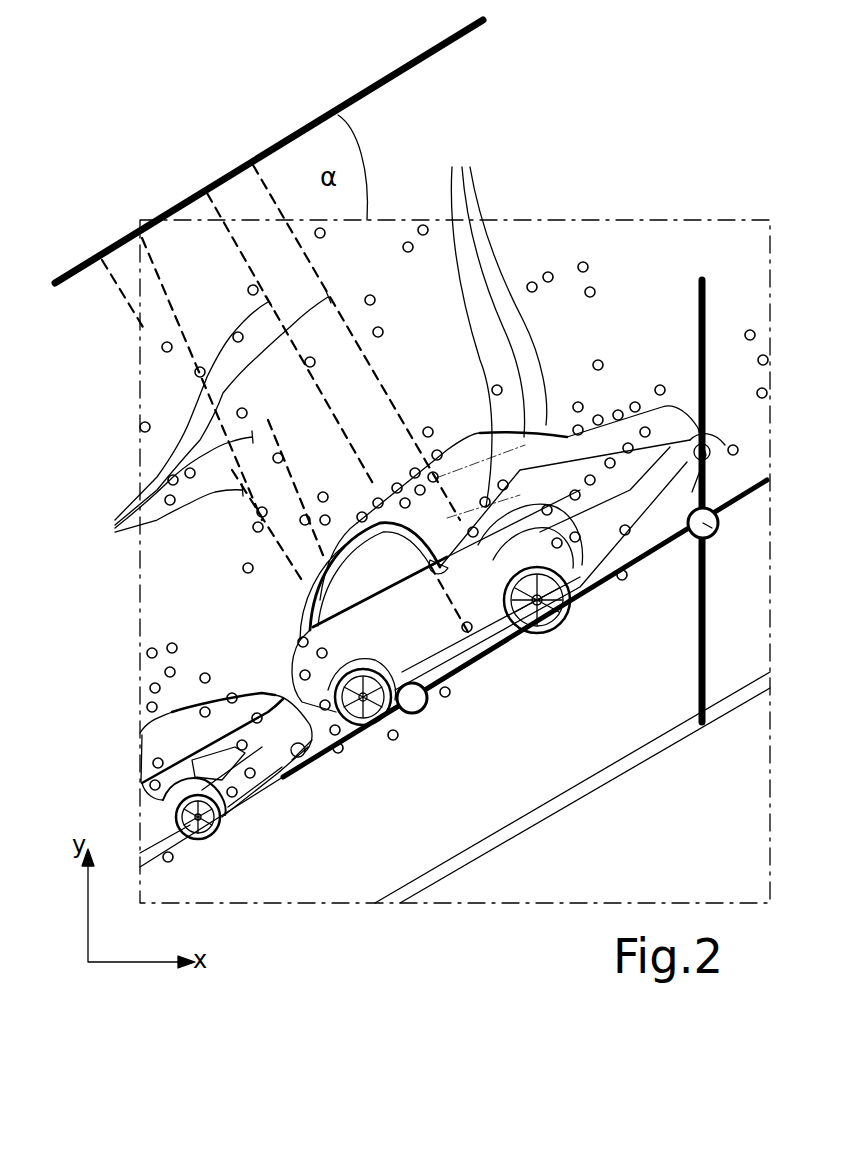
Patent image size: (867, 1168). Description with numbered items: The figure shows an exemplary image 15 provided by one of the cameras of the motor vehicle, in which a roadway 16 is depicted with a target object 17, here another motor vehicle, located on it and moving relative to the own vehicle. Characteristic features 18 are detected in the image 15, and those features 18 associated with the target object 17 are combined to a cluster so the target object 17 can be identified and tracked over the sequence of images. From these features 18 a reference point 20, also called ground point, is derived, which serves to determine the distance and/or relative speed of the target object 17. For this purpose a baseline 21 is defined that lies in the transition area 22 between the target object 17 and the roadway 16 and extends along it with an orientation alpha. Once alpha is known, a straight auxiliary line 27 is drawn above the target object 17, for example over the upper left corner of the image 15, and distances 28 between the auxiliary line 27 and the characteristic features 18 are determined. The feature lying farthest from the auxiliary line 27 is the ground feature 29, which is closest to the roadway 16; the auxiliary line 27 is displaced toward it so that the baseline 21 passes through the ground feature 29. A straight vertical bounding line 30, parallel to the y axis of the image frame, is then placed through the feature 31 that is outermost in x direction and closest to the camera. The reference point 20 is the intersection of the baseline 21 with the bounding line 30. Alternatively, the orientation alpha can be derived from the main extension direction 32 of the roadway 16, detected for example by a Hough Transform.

The image 15 is at (593, 220).
The roadway 16 is at (565, 757).
The target object 17 is at (558, 534).
The characteristic features 18 is at (497, 324).
The reference point 20 is at (719, 523).
The baseline 21 is at (598, 582).
The transition area 22 is at (516, 645).
The auxiliary line 27 is at (375, 85).
The distances 28 is at (206, 417).
The ground feature 29 is at (413, 714).
The bounding line 30 is at (700, 603).
The feature 31 is at (703, 443).
The main extension direction 32 is at (615, 775).